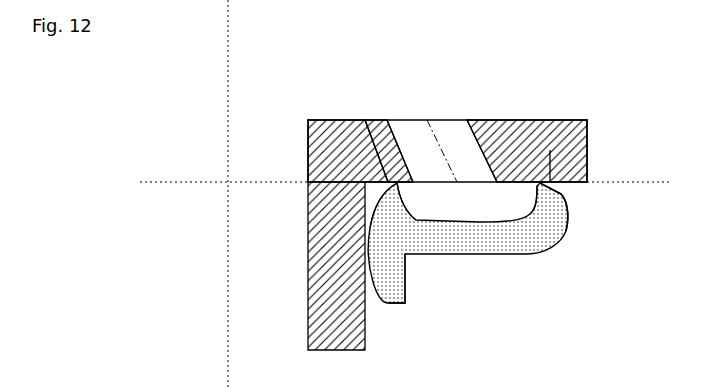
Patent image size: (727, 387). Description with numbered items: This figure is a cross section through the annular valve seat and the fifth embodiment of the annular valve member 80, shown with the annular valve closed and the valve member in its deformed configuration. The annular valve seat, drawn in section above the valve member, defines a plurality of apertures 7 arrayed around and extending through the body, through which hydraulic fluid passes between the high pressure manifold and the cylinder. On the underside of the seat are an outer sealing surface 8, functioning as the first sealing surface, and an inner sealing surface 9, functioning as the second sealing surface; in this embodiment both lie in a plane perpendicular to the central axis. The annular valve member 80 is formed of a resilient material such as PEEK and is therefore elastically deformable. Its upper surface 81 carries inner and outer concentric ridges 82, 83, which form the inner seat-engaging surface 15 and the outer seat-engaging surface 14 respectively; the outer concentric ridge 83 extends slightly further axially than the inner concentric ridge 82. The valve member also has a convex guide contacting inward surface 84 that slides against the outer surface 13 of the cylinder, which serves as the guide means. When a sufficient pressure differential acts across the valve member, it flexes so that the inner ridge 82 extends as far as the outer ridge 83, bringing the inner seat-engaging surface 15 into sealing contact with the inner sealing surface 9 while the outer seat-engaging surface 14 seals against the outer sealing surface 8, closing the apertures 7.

The apertures 7 is at (432, 143).
The outer sealing surface 8 is at (550, 150).
The inner sealing surface 9 is at (365, 120).
The outer surface of the cylinder 13 is at (367, 325).
The outer seat-engaging surface 14 is at (564, 201).
The inner seat-engaging surface 15 is at (395, 185).
The annular valve member 80 is at (452, 243).
The upper surface 81 is at (470, 217).
The inner concentric ridge 82 is at (396, 205).
The outer concentric ridge 83 is at (543, 213).
The convex guide contacting inward surface 84 is at (368, 258).